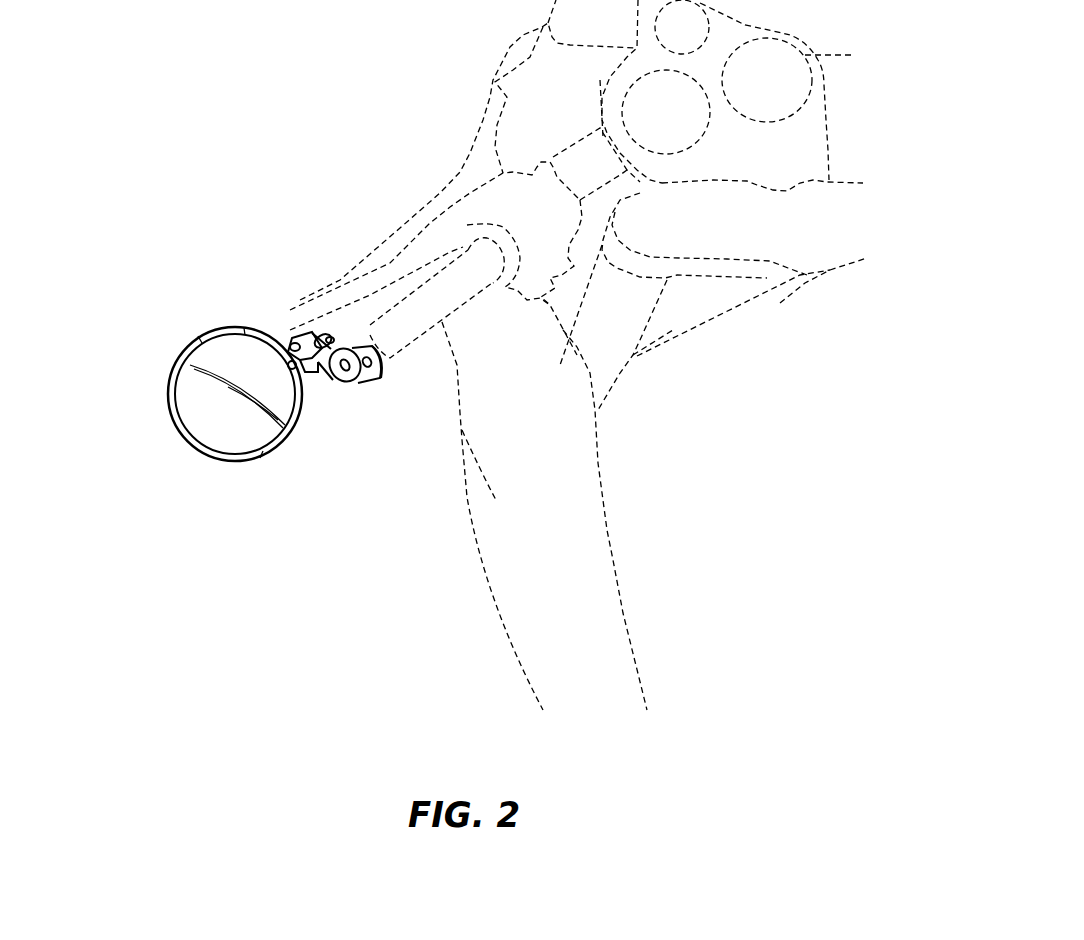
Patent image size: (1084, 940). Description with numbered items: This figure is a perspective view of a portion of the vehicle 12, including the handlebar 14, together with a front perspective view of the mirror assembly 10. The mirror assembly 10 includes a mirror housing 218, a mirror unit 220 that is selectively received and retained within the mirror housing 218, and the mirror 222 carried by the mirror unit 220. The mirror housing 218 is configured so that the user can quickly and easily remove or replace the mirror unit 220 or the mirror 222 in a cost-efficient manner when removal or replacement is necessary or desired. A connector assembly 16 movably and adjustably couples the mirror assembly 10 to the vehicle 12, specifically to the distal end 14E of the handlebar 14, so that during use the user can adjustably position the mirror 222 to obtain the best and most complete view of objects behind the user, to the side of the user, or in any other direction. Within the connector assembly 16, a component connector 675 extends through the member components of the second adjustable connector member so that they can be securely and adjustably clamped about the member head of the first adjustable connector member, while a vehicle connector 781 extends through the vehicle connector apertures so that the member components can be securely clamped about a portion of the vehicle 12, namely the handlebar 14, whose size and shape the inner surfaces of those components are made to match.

The mirror assembly 10 is at (196, 399).
The vehicle 12 is at (487, 85).
The handlebar 14 is at (428, 307).
The distal end of the handlebar 14E is at (378, 382).
The connector assembly 16 is at (356, 317).
The mirror housing 218 is at (247, 330).
The mirror unit 220 is at (230, 432).
The mirror 222 is at (205, 378).
The component connector 675 is at (332, 333).
The vehicle connector 781 is at (366, 385).